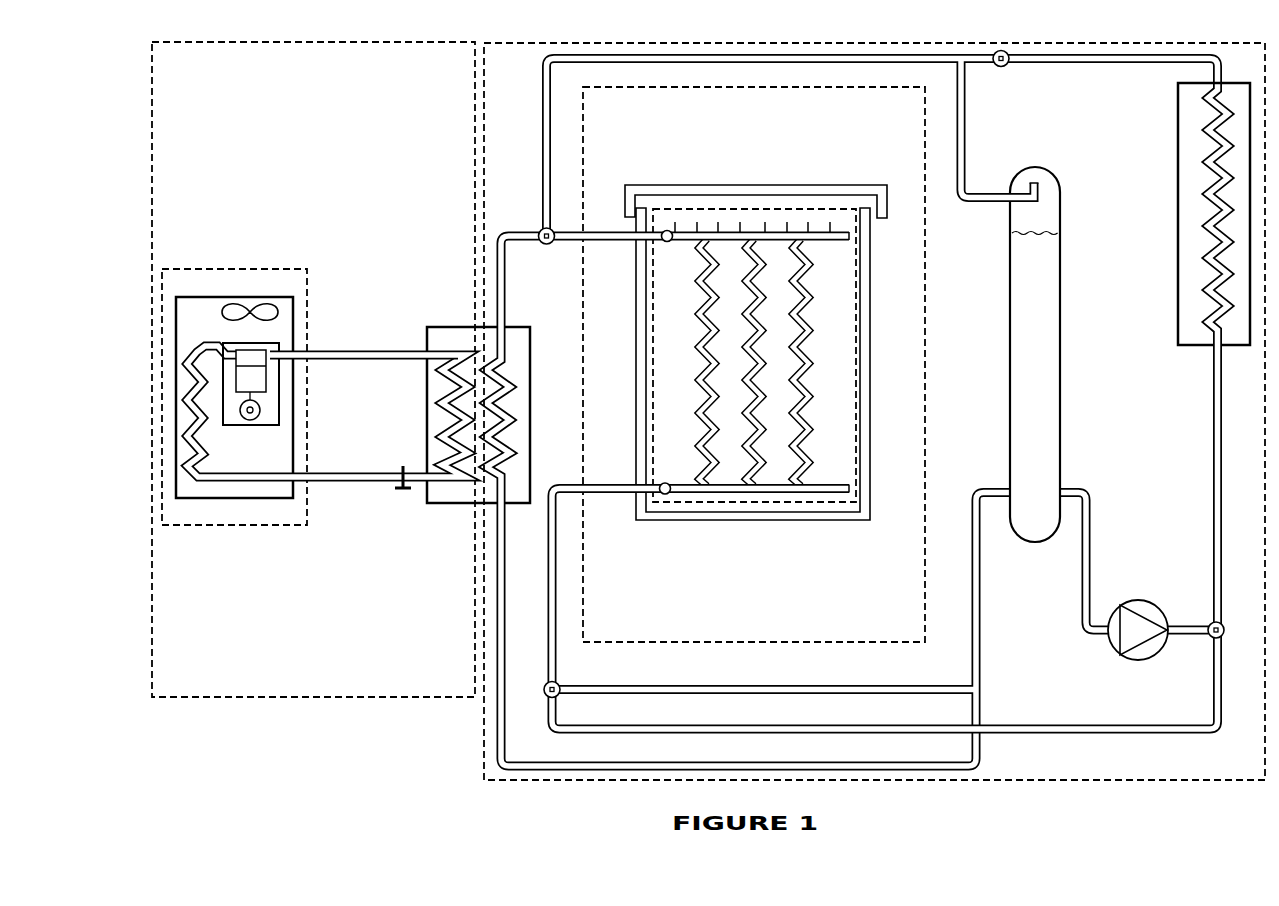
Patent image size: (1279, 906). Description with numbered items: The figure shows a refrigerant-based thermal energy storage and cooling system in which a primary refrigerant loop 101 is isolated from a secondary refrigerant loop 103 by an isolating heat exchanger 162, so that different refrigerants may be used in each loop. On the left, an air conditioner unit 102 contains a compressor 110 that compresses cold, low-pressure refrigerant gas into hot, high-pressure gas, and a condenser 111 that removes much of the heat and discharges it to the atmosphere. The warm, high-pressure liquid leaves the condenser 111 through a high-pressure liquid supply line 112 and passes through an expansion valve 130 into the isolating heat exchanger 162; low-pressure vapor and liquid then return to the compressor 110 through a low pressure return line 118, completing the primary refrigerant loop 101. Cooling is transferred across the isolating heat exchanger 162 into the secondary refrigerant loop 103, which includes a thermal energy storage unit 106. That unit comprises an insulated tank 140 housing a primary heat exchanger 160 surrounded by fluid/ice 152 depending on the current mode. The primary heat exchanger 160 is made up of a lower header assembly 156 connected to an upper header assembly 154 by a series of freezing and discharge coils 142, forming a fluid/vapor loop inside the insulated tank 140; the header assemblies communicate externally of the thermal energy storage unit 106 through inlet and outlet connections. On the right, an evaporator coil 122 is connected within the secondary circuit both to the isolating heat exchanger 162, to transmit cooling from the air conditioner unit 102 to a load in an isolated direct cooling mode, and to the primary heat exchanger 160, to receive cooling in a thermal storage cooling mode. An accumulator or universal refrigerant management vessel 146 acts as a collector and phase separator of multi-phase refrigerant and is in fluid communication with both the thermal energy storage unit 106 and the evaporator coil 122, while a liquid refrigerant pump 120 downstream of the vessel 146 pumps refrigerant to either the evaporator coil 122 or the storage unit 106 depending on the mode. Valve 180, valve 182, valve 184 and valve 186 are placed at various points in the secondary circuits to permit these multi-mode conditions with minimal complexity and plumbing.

The primary refrigerant loop 101 is at (247, 698).
The air conditioner unit 102 is at (253, 527).
The secondary refrigerant loop 103 is at (947, 44).
The thermal energy storage unit 106 is at (601, 643).
The compressor 110 is at (226, 343).
The condenser 111 is at (192, 470).
The high-pressure liquid supply line 112 is at (350, 481).
The low pressure return line 118 is at (360, 351).
The liquid refrigerant pump 120 is at (1105, 645).
The evaporator coil 122 is at (1178, 318).
The expansion valve 130 is at (400, 490).
The insulated tank 140 is at (637, 521).
The freezing and discharge coils 142 is at (807, 376).
The universal refrigerant management vessel (URMV) 146 is at (1050, 168).
The fluid/ice 152 is at (842, 278).
The upper header assembly 154 is at (730, 233).
The lower header assembly 156 is at (783, 495).
The primary heat exchanger 160 is at (678, 212).
The isolating heat exchanger 162 is at (430, 327).
The valve #1 180 is at (1005, 66).
The valve #2 182 is at (540, 231).
The valve #3 184 is at (556, 697).
The valve #4 186 is at (1208, 627).